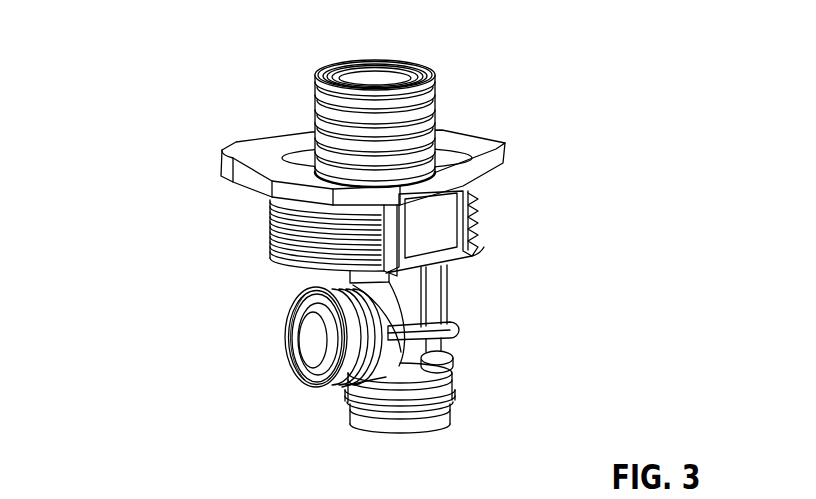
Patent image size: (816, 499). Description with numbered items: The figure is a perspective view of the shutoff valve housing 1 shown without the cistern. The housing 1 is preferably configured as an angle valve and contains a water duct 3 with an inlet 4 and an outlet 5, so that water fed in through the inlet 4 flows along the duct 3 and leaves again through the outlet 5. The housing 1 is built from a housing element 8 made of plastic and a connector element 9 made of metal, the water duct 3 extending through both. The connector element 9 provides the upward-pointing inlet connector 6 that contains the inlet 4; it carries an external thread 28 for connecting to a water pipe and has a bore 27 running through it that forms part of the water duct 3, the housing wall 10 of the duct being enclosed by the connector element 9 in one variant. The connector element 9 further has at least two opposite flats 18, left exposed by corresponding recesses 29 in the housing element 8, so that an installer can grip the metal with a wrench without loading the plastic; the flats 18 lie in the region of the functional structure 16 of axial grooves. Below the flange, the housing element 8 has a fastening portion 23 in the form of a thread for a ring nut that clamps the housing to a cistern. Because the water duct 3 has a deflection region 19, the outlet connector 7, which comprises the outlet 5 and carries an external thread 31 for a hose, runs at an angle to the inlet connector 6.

The shutoff valve housing 1 is at (506, 143).
The water duct 3 is at (385, 78).
The inlet 4 is at (347, 72).
The outlet 5 is at (305, 333).
The inlet connector 6 is at (438, 103).
The outlet connector 7 is at (353, 365).
The housing element 8 is at (459, 334).
The connector element 9 is at (328, 110).
The housing wall 10 is at (417, 78).
The functional structure 16 is at (327, 333).
The flats 18 is at (440, 225).
The deflection region 19 is at (427, 340).
The fastening portion 23 is at (272, 229).
The bore 27 is at (367, 77).
The external thread 28 is at (315, 123).
The recesses 29 is at (478, 247).
The external thread 31 is at (362, 367).